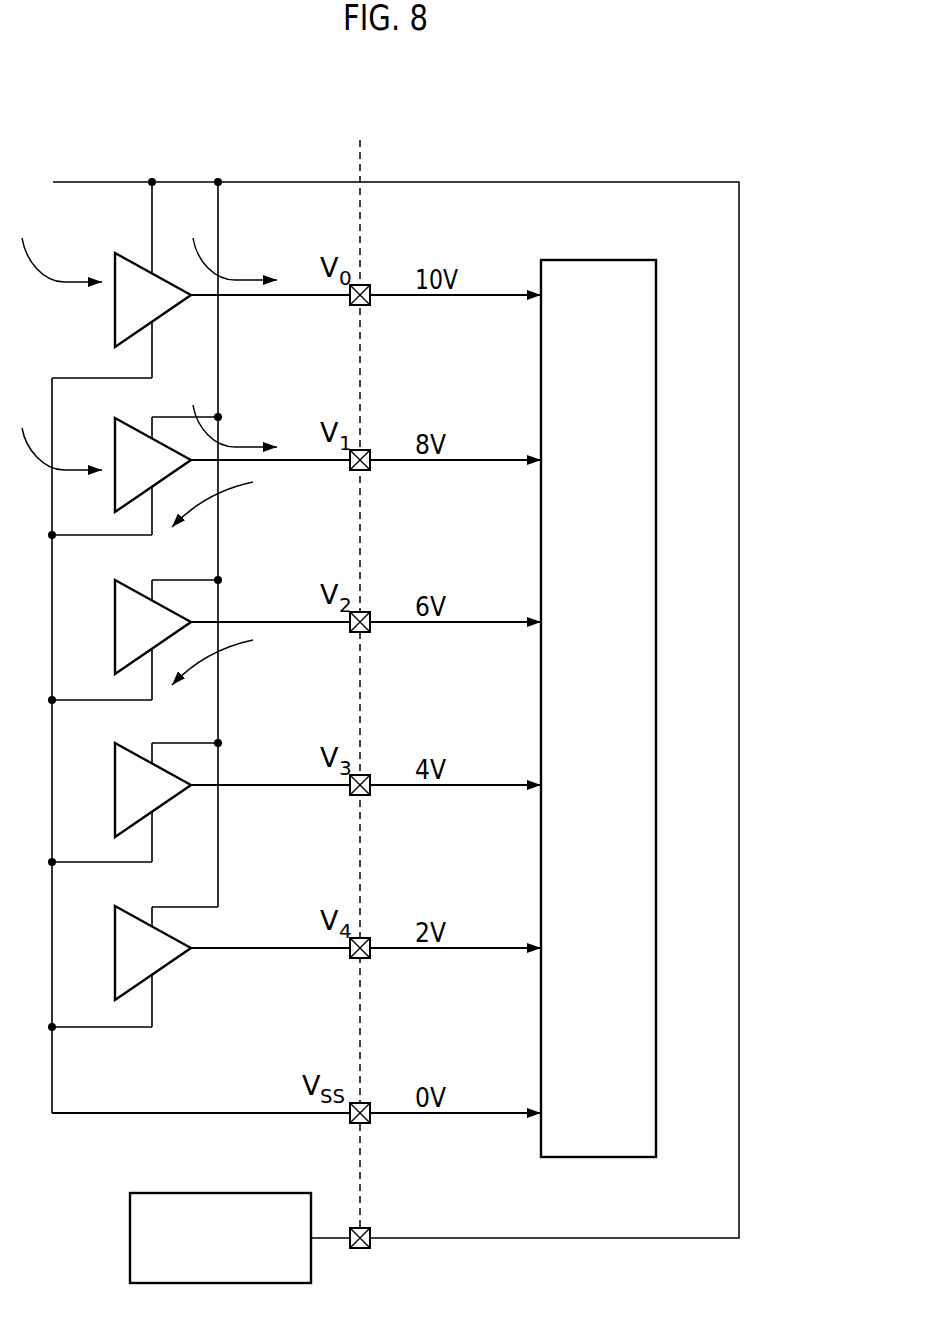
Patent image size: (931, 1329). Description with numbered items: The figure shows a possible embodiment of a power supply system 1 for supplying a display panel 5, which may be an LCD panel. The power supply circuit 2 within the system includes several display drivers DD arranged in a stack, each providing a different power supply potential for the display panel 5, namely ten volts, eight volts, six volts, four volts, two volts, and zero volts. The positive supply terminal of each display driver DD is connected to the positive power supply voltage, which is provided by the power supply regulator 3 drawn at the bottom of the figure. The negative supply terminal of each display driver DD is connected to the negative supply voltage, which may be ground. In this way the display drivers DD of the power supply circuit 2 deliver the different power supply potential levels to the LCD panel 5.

The power supply system 1 is at (413, 147).
The power supply circuit 2 is at (100, 133).
The power supply regulator 3 is at (128, 1240).
The display panel 5 is at (608, 1158).